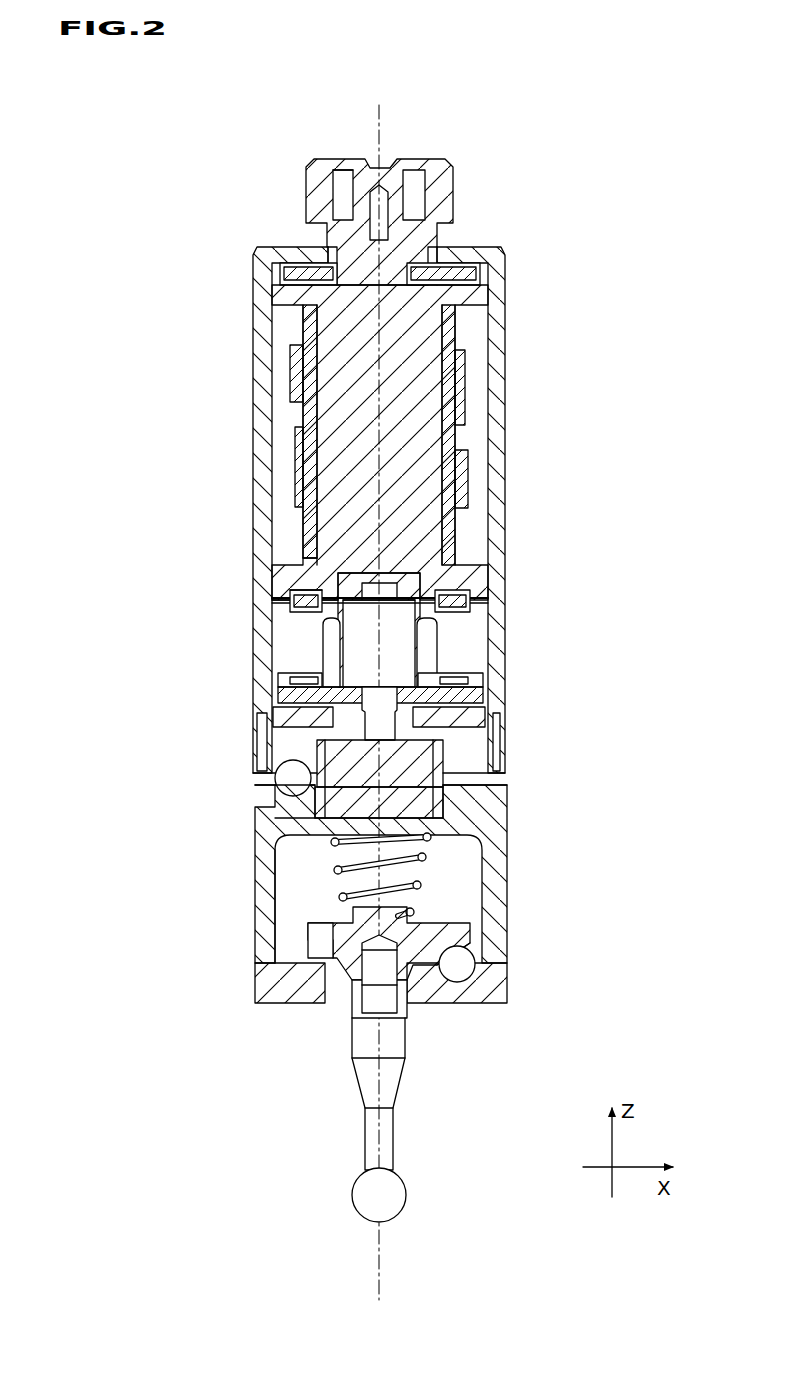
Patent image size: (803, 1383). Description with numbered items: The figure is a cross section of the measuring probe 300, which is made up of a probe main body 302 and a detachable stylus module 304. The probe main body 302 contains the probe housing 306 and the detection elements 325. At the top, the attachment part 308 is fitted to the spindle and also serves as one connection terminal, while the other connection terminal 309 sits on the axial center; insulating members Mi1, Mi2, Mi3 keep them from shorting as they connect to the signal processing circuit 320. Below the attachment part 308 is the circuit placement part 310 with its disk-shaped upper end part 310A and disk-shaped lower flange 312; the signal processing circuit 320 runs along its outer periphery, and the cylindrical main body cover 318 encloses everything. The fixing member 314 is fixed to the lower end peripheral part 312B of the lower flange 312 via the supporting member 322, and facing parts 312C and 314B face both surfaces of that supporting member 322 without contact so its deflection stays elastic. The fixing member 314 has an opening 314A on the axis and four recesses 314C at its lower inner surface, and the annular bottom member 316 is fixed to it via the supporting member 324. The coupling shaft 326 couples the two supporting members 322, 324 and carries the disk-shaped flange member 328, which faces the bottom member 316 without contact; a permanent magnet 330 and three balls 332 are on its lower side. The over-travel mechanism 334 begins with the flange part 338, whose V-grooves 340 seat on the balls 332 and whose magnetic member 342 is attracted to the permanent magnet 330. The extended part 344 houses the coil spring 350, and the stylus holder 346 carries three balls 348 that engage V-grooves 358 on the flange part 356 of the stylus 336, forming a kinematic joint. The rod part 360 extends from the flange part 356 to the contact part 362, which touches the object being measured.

The measuring probe 300 is at (437, 714).
The probe main body 302 is at (401, 456).
The stylus module 304 is at (452, 891).
The probe housing 306 is at (380, 514).
The attachment part 308 is at (414, 205).
The connection terminal 309 is at (387, 173).
The circuit placement part 310 is at (431, 420).
The upper end part 310A is at (450, 303).
The lower flange 312 is at (367, 454).
The lower end peripheral part 312B is at (285, 598).
The facing part 312C is at (313, 557).
The fixing member 314 is at (385, 618).
The opening 314A is at (323, 630).
The facing part 314B is at (283, 593).
The recess 314C is at (283, 683).
The bottom member 316 is at (475, 715).
The main body cover 318 is at (505, 415).
The signal processing circuit 320 is at (457, 350).
The supporting member 322 is at (445, 586).
The supporting member 324 is at (438, 677).
The detection element 325 is at (293, 680).
The coupling shaft 326 is at (398, 632).
The flange member 328 is at (285, 747).
The permanent magnet 330 is at (443, 760).
The ball 332 is at (293, 780).
The over-travel mechanism 334 is at (392, 896).
The stylus 336 is at (443, 1078).
The flange part 338 is at (305, 820).
The V-groove 340 is at (278, 798).
The magnetic member 342 is at (410, 802).
The extended part 344 is at (283, 872).
The stylus holder 346 is at (495, 993).
The ball 348 is at (457, 963).
The coil spring 350 is at (340, 893).
The flange part 356 is at (460, 935).
The V-groove 358 is at (460, 942).
The rod part 360 is at (380, 1152).
The contact part 362 is at (387, 1203).
The insulating member Mi1 is at (343, 190).
The insulating member Mi2 is at (300, 260).
The insulating member Mi3 is at (290, 267).